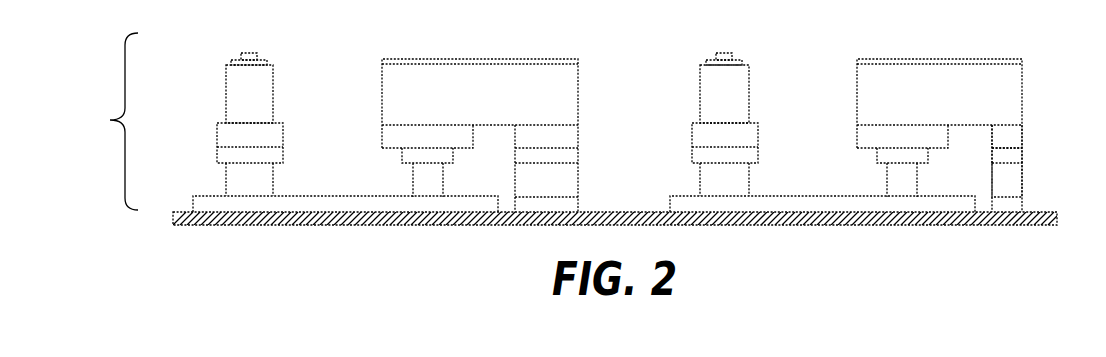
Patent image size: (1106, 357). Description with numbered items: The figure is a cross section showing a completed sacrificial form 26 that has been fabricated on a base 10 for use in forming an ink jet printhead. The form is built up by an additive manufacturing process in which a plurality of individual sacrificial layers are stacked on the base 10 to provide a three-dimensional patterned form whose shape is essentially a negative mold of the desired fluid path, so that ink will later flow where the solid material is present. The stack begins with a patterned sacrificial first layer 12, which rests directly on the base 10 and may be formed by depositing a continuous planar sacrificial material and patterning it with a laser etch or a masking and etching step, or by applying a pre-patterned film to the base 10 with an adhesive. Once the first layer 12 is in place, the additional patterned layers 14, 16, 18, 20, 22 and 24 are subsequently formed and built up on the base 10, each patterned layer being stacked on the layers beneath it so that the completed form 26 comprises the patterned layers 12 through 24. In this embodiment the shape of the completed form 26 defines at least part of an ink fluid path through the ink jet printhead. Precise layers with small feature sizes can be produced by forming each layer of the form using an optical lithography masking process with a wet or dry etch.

The base 10 is at (174, 218).
The sacrificial first layer 12 is at (193, 203).
The patterned layer 14 is at (700, 180).
The patterned layer 16 is at (217, 155).
The patterned layer 18 is at (1023, 137).
The patterned layer 20 is at (578, 95).
The patterned layer 22 is at (237, 59).
The patterned layer 24 is at (252, 52).
The completed sacrificial form 26 is at (110, 120).